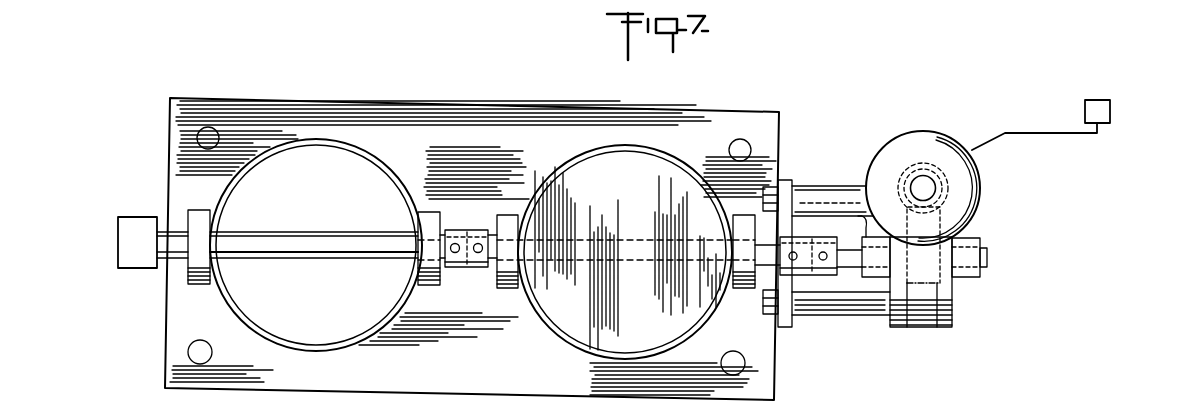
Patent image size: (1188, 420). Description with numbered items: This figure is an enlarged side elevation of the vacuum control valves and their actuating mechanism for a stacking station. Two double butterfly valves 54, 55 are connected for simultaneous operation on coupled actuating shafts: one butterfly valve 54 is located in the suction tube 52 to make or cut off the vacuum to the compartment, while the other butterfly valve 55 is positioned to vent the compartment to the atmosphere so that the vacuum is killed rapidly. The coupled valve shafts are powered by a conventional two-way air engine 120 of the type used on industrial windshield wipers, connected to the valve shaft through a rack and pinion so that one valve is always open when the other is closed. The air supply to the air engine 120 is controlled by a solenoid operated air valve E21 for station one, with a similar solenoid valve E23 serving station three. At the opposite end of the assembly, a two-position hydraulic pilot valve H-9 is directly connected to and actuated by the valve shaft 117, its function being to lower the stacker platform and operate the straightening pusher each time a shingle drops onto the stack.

The suction tube 52 is at (262, 153).
The butterfly valve 54 is at (308, 243).
The butterfly valve 55 is at (617, 167).
The shaft 117 is at (178, 258).
The two-way air engine 120 is at (972, 198).
The hydraulic pilot valve H-9 is at (132, 222).
The solenoid operated air valve E21 is at (1110, 111).
The solenoid operated air valve E23 is at (1168, 98).